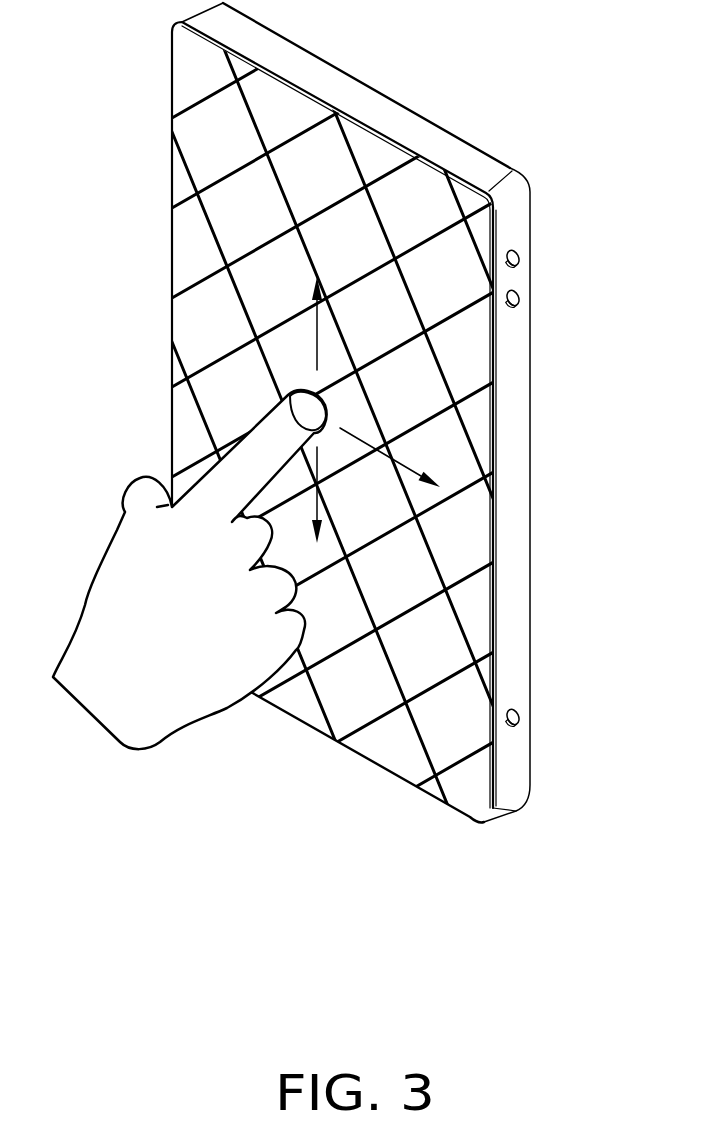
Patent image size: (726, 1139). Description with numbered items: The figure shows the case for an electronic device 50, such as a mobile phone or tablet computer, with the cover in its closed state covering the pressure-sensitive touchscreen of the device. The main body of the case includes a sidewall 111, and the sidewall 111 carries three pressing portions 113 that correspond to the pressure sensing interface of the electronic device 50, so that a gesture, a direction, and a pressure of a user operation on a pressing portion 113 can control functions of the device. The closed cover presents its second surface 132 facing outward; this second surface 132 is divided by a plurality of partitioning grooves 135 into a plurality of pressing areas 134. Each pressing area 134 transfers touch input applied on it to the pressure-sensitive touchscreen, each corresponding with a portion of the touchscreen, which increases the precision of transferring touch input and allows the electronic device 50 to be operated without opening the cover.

The electronic device 50 is at (367, 102).
The sidewall 111 is at (517, 495).
The pressing portion 113 is at (520, 262).
The second surface 132 is at (188, 82).
The pressing areas 134 is at (332, 463).
The partitioning grooves 135 is at (376, 422).